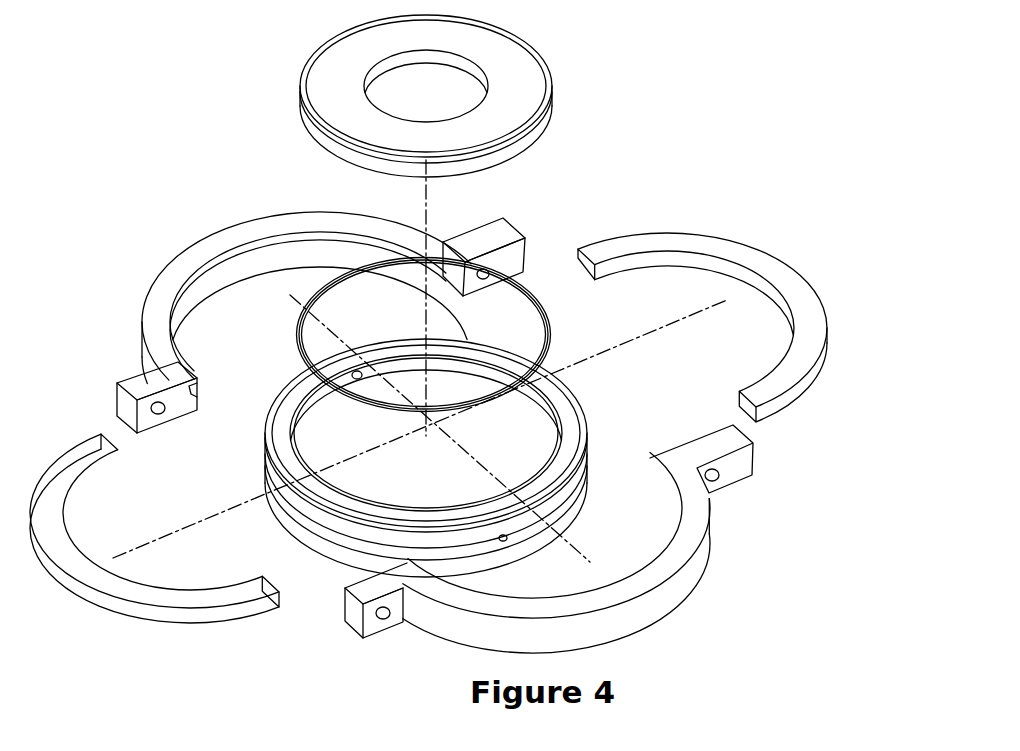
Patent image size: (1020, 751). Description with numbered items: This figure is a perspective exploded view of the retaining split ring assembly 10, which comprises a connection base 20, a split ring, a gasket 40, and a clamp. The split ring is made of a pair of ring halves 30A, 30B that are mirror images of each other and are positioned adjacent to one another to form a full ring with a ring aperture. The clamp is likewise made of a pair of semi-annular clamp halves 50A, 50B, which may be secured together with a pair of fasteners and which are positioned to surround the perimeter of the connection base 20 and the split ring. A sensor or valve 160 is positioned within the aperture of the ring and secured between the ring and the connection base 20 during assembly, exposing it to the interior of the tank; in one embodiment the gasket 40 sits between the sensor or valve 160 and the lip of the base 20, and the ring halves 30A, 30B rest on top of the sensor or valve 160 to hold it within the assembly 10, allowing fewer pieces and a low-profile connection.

The retaining split ring assembly 10 is at (812, 527).
The connection base 20 is at (333, 550).
The ring half 30A is at (132, 604).
The ring half 30B is at (805, 298).
The gasket 40 is at (553, 314).
The clamp half 50A is at (667, 593).
The clamp half 50B is at (198, 253).
The sensor or valve 160 is at (350, 62).